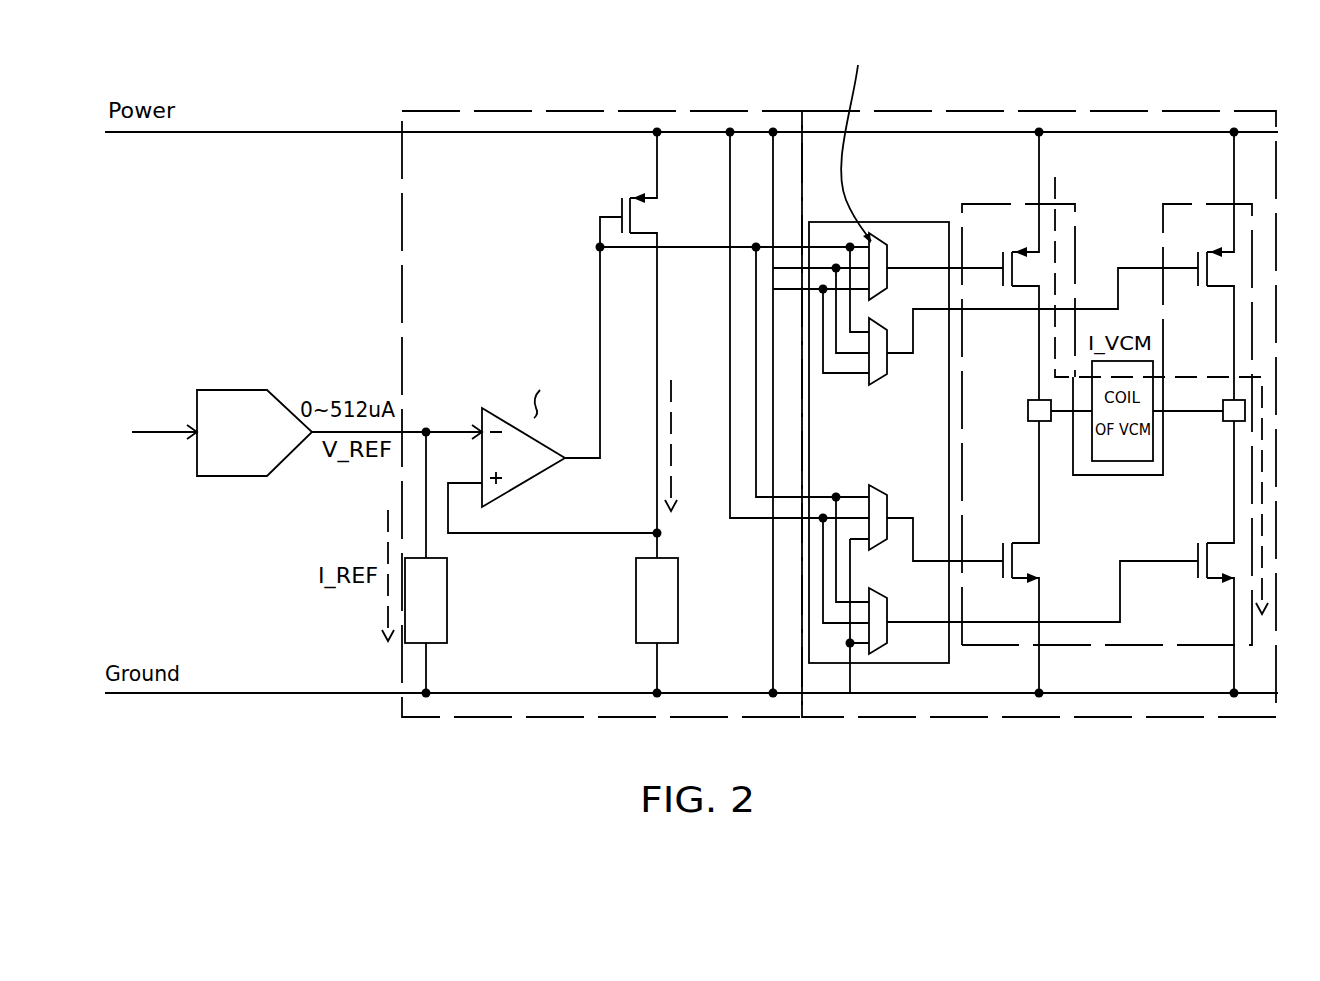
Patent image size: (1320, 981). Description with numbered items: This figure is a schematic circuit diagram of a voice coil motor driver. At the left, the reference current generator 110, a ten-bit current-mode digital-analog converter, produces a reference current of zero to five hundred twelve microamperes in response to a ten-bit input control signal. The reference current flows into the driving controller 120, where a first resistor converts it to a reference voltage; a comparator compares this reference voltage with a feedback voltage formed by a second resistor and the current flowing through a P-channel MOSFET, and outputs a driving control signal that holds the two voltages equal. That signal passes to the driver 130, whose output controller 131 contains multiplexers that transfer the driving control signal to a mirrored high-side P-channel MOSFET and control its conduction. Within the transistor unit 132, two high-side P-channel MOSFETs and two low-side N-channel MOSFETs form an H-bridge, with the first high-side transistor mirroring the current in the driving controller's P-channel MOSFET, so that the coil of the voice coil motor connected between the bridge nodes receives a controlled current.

The reference current generator 110 is at (218, 390).
The driving controller 120 is at (467, 111).
The driver 130 is at (970, 111).
The output controller 131 is at (897, 222).
The transistor unit 132 is at (1005, 204).